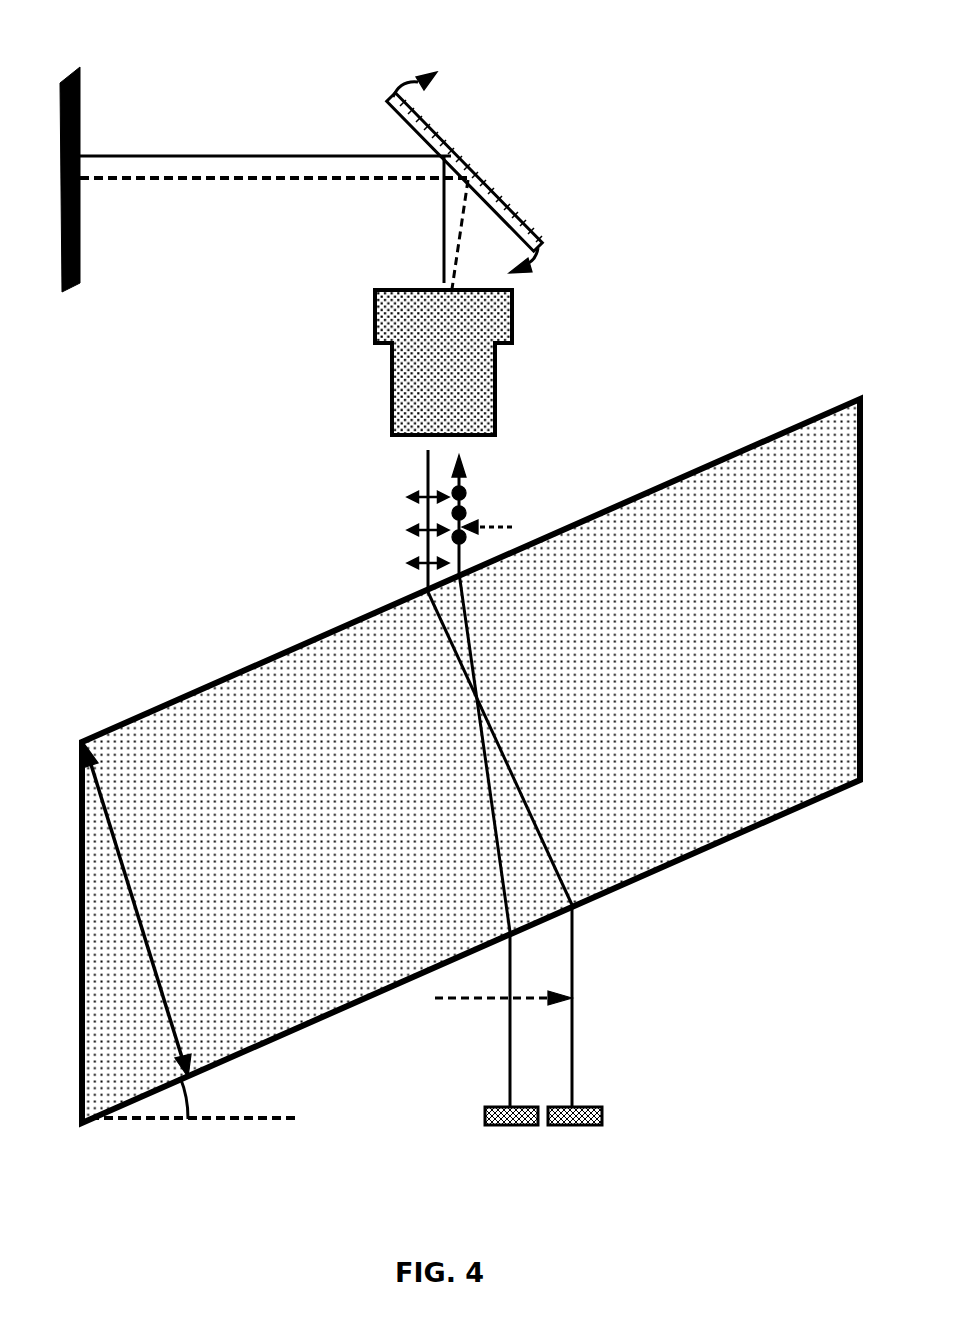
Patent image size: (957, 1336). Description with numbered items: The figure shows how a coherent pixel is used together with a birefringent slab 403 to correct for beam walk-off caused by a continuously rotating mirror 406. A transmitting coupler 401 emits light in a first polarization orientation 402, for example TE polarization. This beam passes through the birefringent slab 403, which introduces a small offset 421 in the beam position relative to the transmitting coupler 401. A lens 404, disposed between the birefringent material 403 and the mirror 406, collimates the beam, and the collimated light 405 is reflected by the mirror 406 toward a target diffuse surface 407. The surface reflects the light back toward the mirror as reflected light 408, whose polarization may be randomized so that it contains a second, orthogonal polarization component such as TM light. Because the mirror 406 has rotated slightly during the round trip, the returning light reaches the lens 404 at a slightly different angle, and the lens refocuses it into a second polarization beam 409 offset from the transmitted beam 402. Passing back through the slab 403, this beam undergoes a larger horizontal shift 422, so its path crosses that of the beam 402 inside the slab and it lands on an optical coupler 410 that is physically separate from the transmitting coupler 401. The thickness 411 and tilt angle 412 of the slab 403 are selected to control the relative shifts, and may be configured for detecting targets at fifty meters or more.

The transmitting coupler 401 is at (485, 1115).
The first polarization orientation light 402 is at (470, 500).
The birefringent slab 403 is at (745, 450).
The lens 404 is at (512, 325).
The collimated light 405 is at (444, 218).
The continuously rotating mirror 406 is at (538, 228).
The target diffuse surface 407 is at (80, 78).
The reflected light 408 is at (202, 180).
The second polarization beam 409 is at (410, 513).
The optical coupler 410 is at (602, 1116).
The thickness 411 is at (152, 950).
The tilt angle 412 is at (193, 1097).
The offset 421 is at (484, 522).
The shift 422 is at (485, 1000).